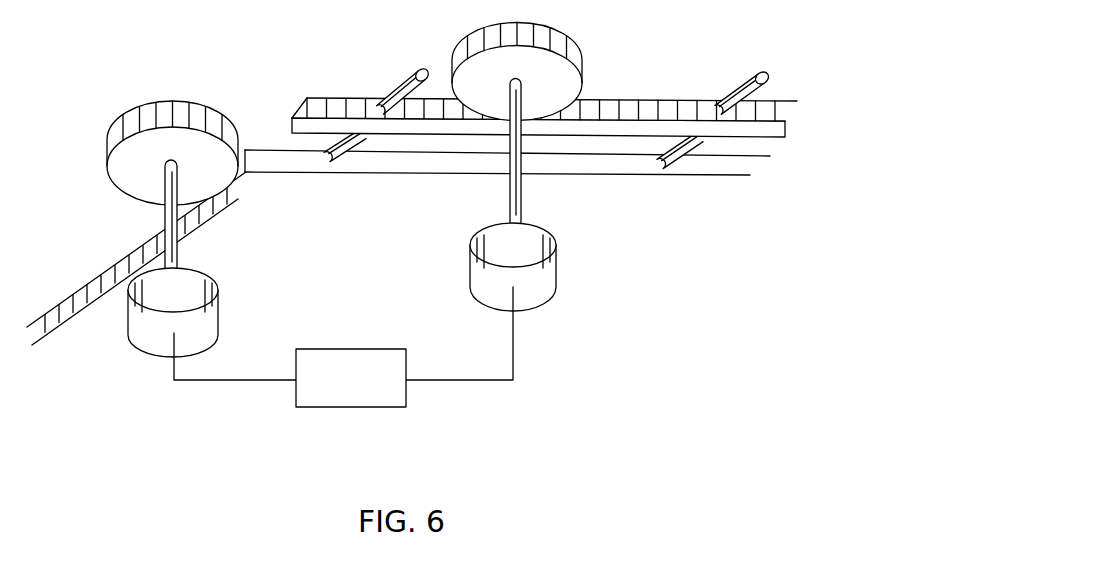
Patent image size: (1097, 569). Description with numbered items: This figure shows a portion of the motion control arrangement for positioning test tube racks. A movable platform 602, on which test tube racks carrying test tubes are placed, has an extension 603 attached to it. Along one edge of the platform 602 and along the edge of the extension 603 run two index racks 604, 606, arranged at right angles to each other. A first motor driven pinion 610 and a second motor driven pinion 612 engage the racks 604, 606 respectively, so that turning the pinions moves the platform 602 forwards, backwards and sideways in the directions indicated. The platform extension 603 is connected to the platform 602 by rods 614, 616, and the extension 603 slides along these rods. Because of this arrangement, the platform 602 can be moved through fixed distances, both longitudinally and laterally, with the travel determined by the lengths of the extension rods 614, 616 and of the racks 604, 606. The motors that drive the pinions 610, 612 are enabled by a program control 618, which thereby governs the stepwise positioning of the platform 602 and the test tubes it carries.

The movable platform 602 is at (216, 124).
The extension 603 is at (353, 97).
The index rack 604 is at (97, 268).
The index rack 606 is at (697, 102).
The first motor driven pinion 610 is at (110, 132).
The second motor driven pinion 612 is at (582, 53).
The rod 614 is at (350, 158).
The rod 616 is at (677, 160).
The program control 618 is at (295, 398).